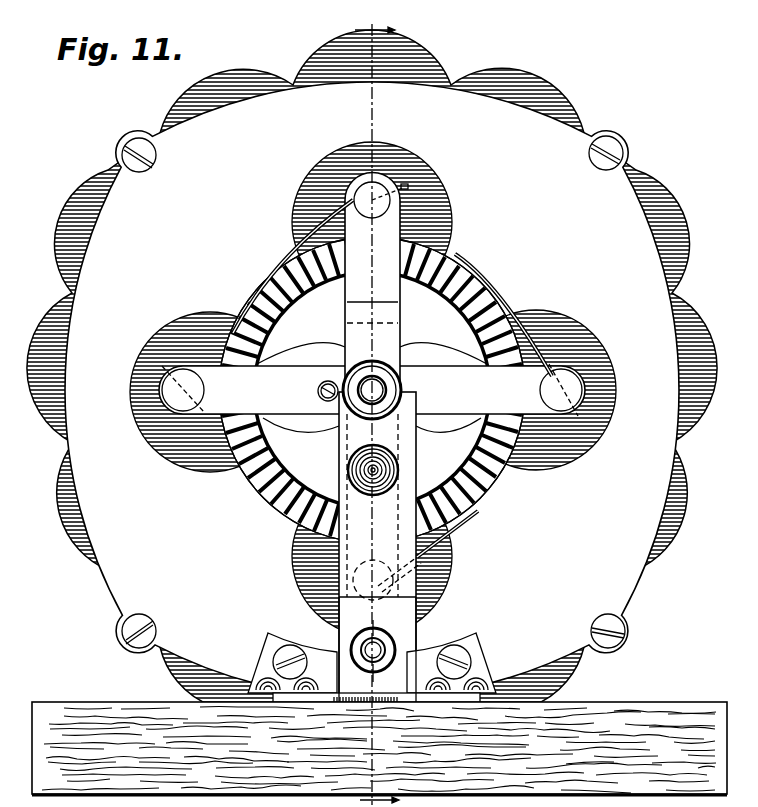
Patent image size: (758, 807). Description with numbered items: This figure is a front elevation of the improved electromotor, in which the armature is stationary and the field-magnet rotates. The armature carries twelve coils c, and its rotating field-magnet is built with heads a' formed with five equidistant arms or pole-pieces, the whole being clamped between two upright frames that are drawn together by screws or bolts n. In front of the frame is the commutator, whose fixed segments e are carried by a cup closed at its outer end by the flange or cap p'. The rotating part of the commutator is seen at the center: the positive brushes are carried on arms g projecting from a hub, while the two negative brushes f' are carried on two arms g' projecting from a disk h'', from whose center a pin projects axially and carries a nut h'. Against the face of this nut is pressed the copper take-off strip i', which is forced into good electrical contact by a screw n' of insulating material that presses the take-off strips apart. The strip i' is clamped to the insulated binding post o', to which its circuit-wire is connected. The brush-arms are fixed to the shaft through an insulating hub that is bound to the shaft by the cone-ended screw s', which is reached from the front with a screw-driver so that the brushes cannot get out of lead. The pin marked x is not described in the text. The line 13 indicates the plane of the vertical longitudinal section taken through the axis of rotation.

The armature coil c is at (445, 78).
The screw or bolt n is at (373, 392).
The field-magnet head a' is at (373, 389).
The pin x is at (381, 200).
The positive brush arm g is at (372, 283).
The negative brush arm g' is at (372, 390).
The negative brush f' is at (372, 390).
The flange or cap p' is at (372, 390).
The set-screw s' is at (318, 387).
The nut h' is at (392, 390).
The disk h'' is at (347, 401).
The insulating screw n' is at (373, 483).
The take-off brush i' is at (373, 571).
The commutator-segment e is at (482, 500).
The binding post o' is at (377, 547).
The section line 13- 13 is at (381, 408).